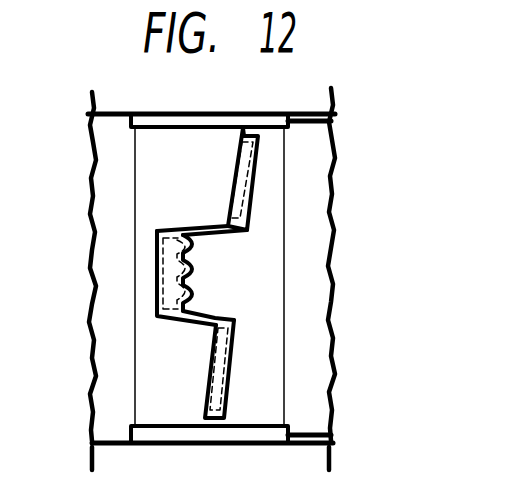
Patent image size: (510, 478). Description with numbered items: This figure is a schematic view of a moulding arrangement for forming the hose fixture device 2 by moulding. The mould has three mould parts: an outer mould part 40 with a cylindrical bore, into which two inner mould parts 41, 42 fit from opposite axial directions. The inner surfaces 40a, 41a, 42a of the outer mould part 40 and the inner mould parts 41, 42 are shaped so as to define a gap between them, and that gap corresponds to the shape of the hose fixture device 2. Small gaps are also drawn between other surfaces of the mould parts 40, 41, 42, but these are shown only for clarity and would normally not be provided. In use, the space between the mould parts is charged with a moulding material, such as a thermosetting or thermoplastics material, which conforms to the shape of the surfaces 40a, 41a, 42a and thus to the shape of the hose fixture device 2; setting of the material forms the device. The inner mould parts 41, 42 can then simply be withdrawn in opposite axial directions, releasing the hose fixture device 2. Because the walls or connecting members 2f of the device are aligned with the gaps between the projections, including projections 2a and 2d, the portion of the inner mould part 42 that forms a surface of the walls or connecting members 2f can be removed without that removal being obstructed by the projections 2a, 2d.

The hose fixture device 2 is at (288, 262).
The projection 2a is at (259, 172).
The projection 2d is at (230, 380).
The wall or connecting member 2f is at (153, 262).
The outer mould part 40 is at (92, 456).
The inner surface of outer mould part 40a is at (333, 122).
The inner mould part 41 is at (88, 372).
The inner surface of inner mould part 41a is at (191, 226).
The inner mould part 42 is at (332, 215).
The inner surface of inner mould part 42a is at (203, 233).